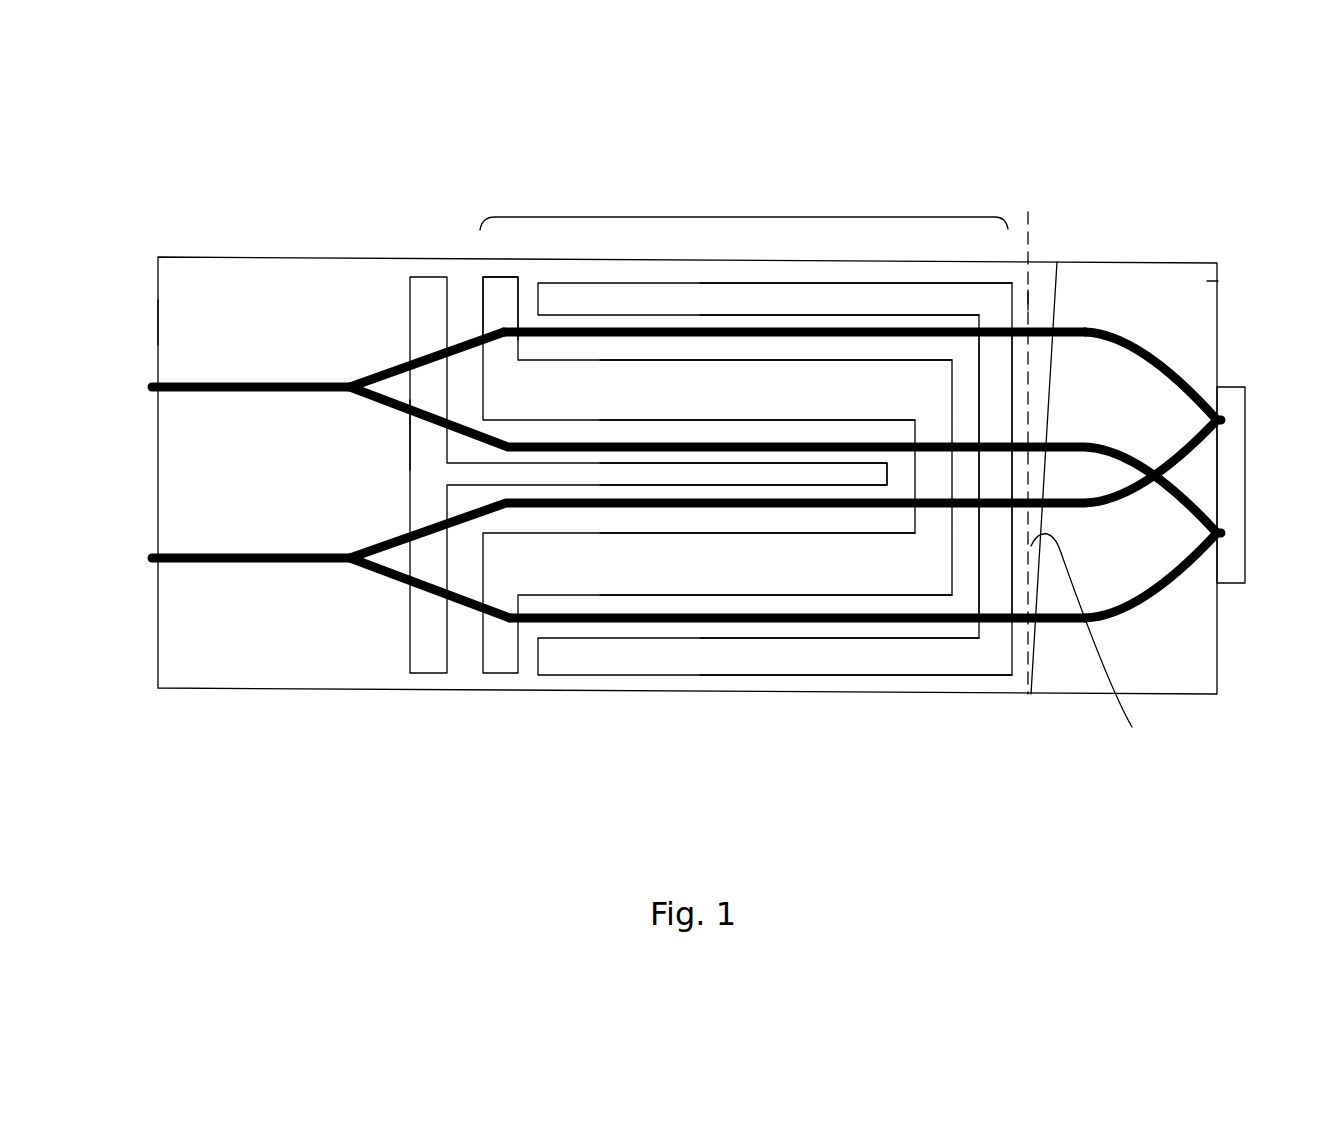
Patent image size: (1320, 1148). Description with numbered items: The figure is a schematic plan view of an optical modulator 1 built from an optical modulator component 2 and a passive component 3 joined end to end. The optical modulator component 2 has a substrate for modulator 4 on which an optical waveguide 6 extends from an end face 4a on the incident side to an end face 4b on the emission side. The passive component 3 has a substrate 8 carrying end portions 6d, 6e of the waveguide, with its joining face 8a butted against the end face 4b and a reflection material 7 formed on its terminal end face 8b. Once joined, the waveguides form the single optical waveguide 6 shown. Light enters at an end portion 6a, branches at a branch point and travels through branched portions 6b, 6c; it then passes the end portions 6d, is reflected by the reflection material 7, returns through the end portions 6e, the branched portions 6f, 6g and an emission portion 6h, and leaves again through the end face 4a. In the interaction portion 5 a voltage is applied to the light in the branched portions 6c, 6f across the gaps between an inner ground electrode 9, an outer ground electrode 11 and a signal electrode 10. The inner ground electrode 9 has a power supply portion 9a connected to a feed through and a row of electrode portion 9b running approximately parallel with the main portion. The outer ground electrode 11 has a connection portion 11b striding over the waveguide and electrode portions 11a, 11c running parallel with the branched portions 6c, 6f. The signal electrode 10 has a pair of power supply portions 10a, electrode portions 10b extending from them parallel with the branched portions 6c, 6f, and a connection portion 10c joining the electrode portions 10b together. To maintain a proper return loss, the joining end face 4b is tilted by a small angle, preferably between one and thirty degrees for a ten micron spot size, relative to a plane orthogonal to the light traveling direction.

The optical modulator 1 is at (1213, 166).
The optical modulator component 2 is at (605, 191).
The passive component 3 is at (1103, 234).
The substrate for modulator 4 is at (335, 275).
The end face 4a is at (156, 322).
The end face 4b is at (1047, 285).
The interaction portion 5 is at (762, 217).
The optical waveguide 6 is at (305, 360).
The end portion 6a is at (258, 383).
The branched portion 6b is at (470, 345).
The branched portion 6c is at (853, 330).
The end portion 6d is at (1160, 368).
The end portion 6e is at (1173, 580).
The branched portion 6f is at (868, 623).
The branched portion 6g is at (427, 593).
The emission portion 6h is at (292, 567).
The reflection material 7 is at (1237, 408).
The substrate 8 is at (1160, 268).
The joining face 8a is at (1050, 300).
The terminal end face 8b is at (1223, 282).
The inner ground electrode 9 is at (413, 266).
The power supply portion 9a is at (417, 430).
The row of electrode portion 9b is at (683, 477).
The signal electrode 10 is at (517, 266).
The power supply portion 10a is at (500, 277).
The electrode portion 10b is at (760, 372).
The connection portion 10c is at (940, 478).
The outer ground electrode 11 is at (670, 272).
The electrode portion 11a is at (912, 293).
The connection portion 11b is at (1000, 373).
The electrode portion 11c is at (785, 660).